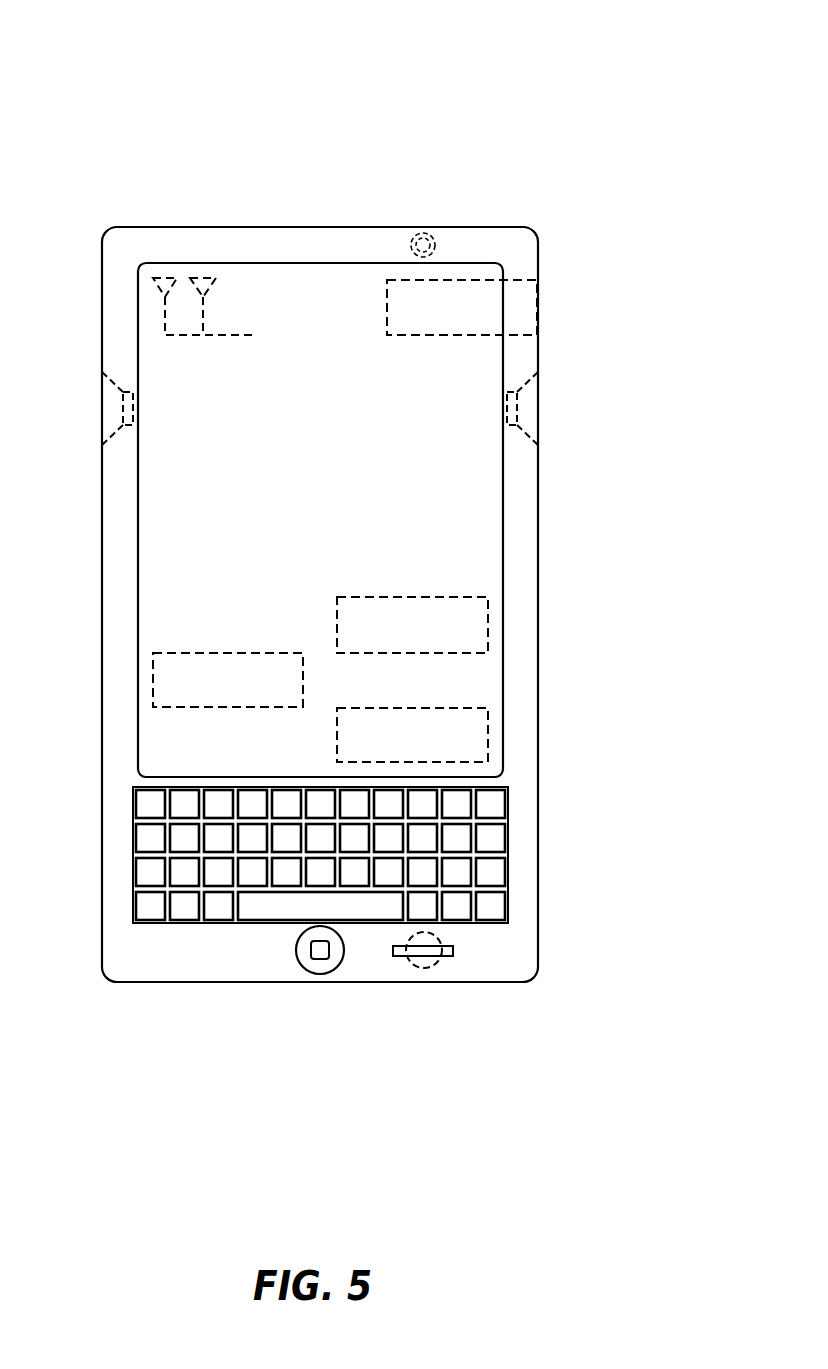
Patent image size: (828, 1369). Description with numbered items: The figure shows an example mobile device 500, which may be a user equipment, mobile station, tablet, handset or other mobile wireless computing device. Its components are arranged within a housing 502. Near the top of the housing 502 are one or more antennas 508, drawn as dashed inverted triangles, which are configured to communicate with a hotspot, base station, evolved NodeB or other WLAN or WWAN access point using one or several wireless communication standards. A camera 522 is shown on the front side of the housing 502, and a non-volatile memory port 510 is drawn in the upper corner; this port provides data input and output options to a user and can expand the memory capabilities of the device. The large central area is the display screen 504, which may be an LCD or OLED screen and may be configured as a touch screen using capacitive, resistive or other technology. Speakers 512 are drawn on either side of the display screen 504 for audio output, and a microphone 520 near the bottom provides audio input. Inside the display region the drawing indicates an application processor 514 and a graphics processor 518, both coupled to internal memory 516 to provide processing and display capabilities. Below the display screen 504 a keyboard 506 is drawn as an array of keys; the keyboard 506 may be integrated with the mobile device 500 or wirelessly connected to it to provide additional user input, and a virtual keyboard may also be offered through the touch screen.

The mobile device 500 is at (606, 28).
The housing 502 is at (320, 227).
The display screen 504 is at (483, 510).
The keyboard 506 is at (508, 856).
The antennas 508 is at (208, 280).
The non-volatile memory port 510 is at (538, 308).
The speakers 512 is at (112, 408).
The application processor 514 is at (410, 597).
The internal memory 516 is at (410, 708).
The graphics processor 518 is at (227, 653).
The microphone 520 is at (424, 968).
The camera 522 is at (432, 236).